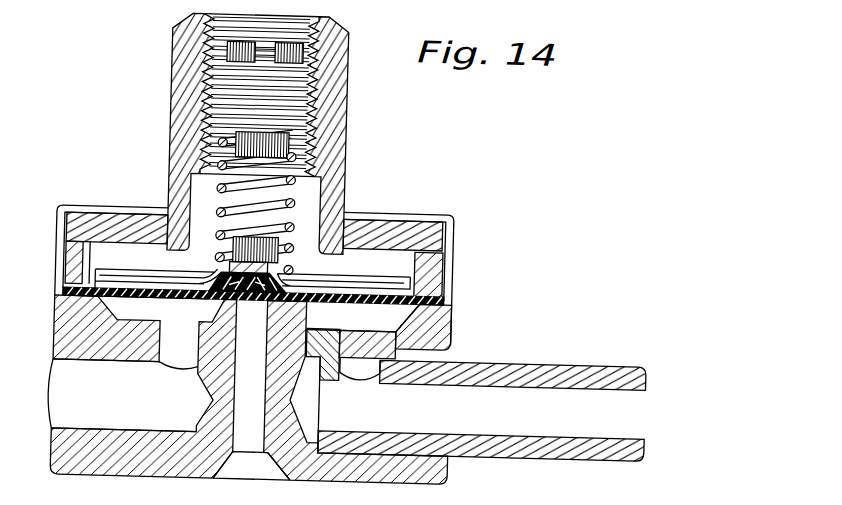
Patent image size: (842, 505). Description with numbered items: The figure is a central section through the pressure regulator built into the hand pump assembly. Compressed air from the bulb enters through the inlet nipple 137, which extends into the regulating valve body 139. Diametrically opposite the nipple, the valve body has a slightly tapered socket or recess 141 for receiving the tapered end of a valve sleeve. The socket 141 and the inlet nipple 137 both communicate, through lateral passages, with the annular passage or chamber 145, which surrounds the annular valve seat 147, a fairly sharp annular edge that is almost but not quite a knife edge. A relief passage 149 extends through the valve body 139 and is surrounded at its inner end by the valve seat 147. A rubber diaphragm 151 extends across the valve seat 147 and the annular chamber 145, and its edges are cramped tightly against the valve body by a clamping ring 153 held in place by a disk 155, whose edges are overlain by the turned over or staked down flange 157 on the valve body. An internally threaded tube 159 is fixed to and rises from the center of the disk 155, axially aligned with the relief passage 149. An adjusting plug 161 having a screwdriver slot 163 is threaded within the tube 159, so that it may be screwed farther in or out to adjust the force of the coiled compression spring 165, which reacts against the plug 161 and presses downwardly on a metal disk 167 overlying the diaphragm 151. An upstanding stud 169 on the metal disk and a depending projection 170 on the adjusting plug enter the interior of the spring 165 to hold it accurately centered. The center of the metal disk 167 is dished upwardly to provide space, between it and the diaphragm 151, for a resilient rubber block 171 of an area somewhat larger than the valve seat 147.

The inlet nipple 137 is at (570, 354).
The regulating valve body 139 is at (439, 322).
The socket or recess 141 is at (146, 386).
The annular passage or chamber 145 is at (363, 317).
The annular valve seat 147 is at (277, 309).
The relief passage 149 is at (245, 445).
The rubber diaphragm 151 is at (161, 301).
The clamping ring 153 is at (92, 262).
The disk 155 is at (136, 193).
The flange 157 is at (89, 210).
The internally threaded tube 159 is at (342, 122).
The adjusting plug 161 is at (219, 98).
The screwdriver slot 163 is at (218, 51).
The coiled compression spring 165 is at (286, 201).
The metal disk 167 is at (354, 282).
The upstanding stud 169 is at (222, 251).
The depending projection 170 is at (237, 147).
The resilient rubber block 171 is at (294, 281).